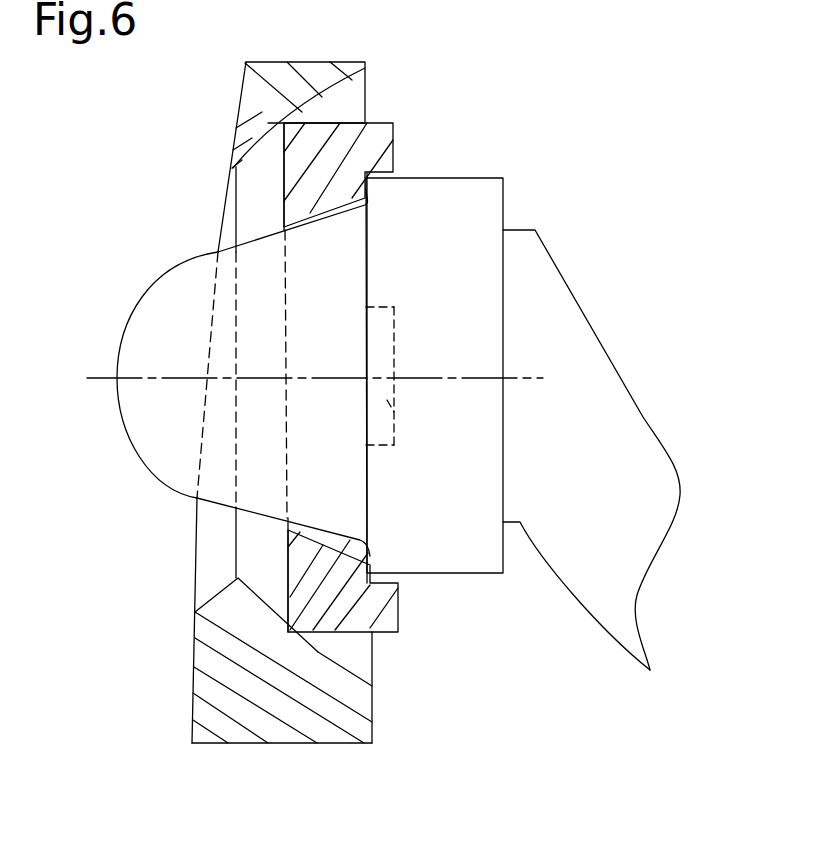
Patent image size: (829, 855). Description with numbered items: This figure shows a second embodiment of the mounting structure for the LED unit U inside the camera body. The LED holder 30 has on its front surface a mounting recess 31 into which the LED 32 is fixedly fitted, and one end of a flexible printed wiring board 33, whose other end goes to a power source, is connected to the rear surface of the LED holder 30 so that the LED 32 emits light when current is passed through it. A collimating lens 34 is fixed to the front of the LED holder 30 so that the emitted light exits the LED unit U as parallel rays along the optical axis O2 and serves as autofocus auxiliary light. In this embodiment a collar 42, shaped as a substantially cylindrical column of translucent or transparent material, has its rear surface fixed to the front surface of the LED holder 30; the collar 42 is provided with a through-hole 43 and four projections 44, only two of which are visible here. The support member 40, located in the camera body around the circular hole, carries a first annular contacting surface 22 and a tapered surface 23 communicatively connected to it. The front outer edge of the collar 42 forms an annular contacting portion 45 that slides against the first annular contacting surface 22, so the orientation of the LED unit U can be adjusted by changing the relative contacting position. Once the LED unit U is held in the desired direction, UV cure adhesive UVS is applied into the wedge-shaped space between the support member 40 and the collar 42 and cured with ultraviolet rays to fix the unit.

The optical axis O2 is at (103, 378).
The collimating lens 34 is at (160, 400).
The support member 40 is at (312, 72).
The first annular contacting surface 22 is at (302, 106).
The annular contacting portion 45 is at (270, 123).
The UV cure adhesive UVS is at (304, 122).
The projections 44 is at (394, 151).
The through-hole 43 is at (336, 541).
The collar 42 is at (332, 623).
The tapered surface 23 is at (212, 602).
The LED holder 30 is at (463, 203).
The mounting recess 31 is at (406, 327).
The LED 32 is at (394, 406).
The flexible printed wiring board 33 is at (608, 388).
The LED unit U is at (529, 592).